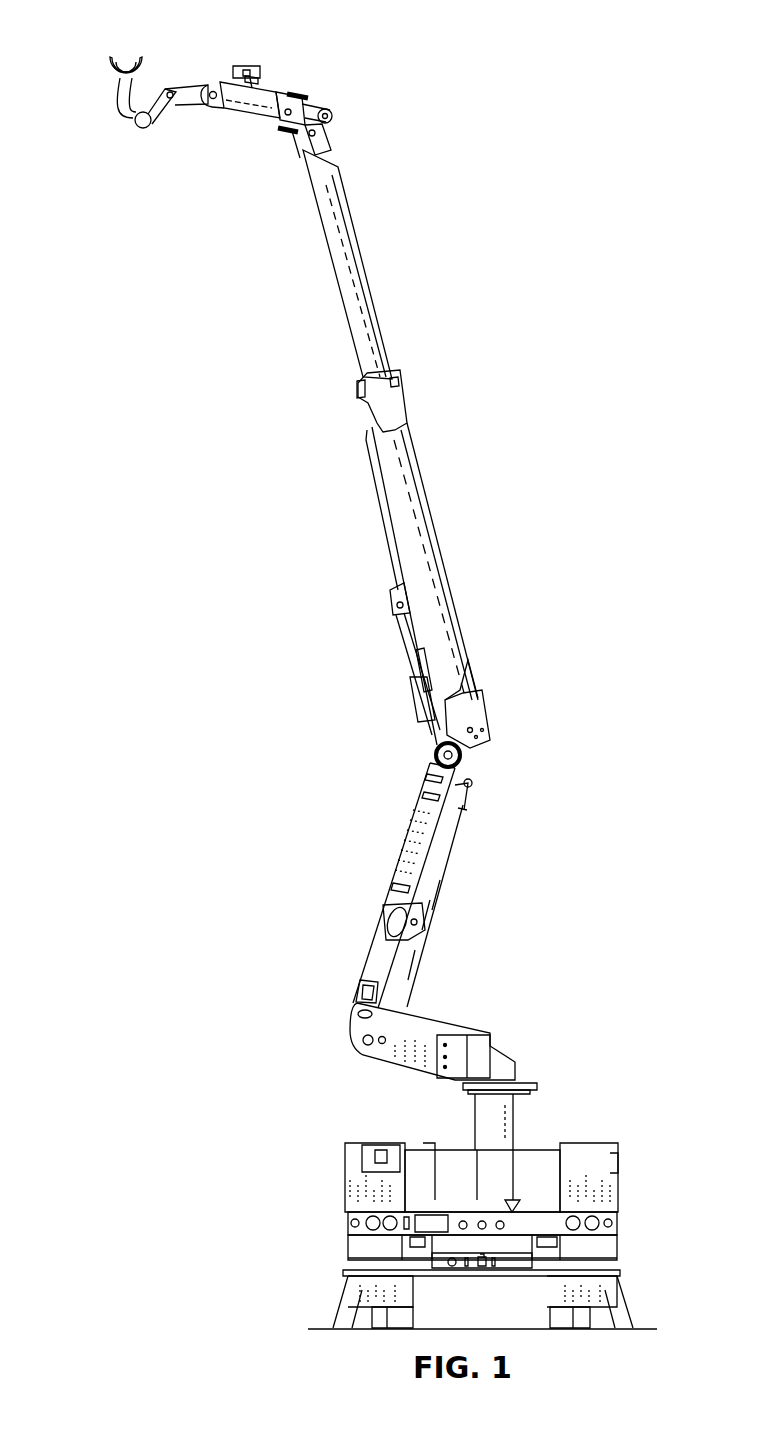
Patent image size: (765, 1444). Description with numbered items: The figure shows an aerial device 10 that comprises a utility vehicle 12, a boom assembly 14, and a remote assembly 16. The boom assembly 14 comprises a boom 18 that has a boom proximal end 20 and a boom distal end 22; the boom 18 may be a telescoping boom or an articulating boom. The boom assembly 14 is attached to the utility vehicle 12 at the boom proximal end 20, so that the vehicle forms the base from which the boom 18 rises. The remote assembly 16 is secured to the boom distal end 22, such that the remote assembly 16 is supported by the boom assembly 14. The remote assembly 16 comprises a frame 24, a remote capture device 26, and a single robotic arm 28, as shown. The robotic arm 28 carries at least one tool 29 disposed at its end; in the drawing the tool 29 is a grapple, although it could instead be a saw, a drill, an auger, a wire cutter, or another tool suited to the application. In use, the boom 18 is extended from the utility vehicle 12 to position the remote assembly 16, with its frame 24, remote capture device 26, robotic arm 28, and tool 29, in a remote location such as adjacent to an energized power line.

The aerial device 10 is at (565, 790).
The utility vehicle 12 is at (345, 1200).
The boom assembly 14 is at (440, 530).
The remote assembly 16 is at (104, 60).
The boom 18 is at (397, 534).
The boom proximal end 20 is at (415, 835).
The boom distal end 22 is at (368, 268).
The frame 24 is at (246, 116).
The remote capture device 26 is at (251, 66).
The robotic arm 28 is at (150, 130).
The tool 29 is at (112, 76).